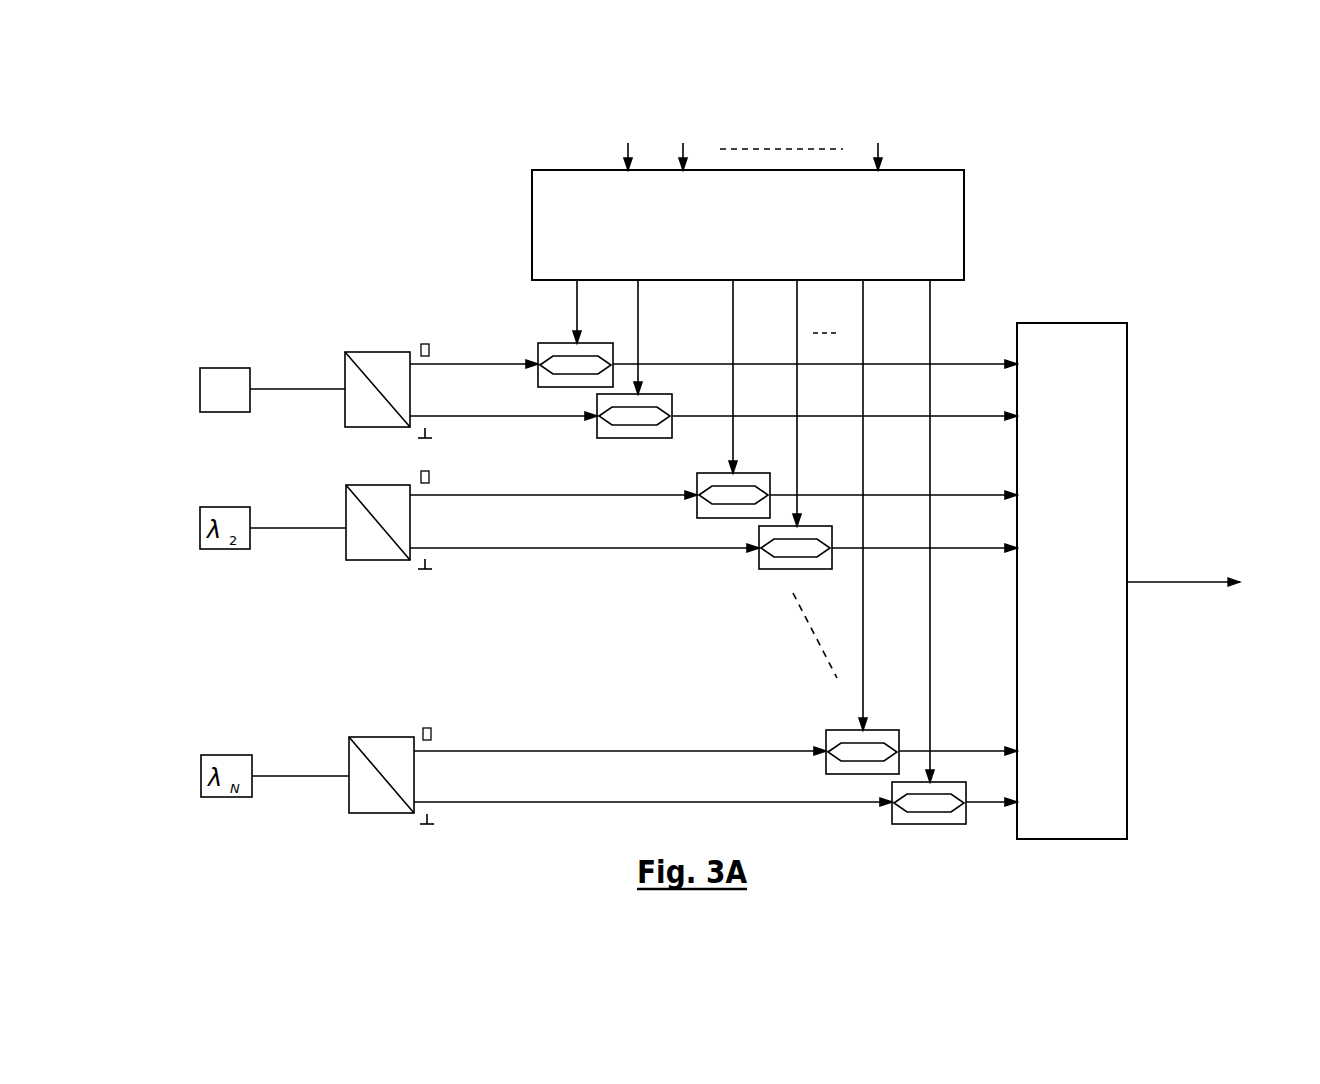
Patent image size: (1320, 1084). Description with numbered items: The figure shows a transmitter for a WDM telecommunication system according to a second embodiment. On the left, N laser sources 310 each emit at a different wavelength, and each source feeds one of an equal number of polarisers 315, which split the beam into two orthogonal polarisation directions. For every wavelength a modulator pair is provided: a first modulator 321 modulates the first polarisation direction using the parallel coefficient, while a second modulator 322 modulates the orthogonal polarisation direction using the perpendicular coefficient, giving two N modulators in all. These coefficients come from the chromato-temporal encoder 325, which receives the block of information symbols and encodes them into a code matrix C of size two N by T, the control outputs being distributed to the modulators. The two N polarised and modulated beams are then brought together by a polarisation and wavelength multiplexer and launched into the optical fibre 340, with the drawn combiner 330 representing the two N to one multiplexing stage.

The laser sources 310 is at (240, 368).
The polarisers 315 is at (390, 352).
The first modulator 321 is at (545, 343).
The second modulator 322 is at (760, 570).
The chromato-temporal encoder 325 is at (964, 225).
The 2N:1 combiner 330 is at (1102, 323).
The optical fibre 340 is at (1173, 582).